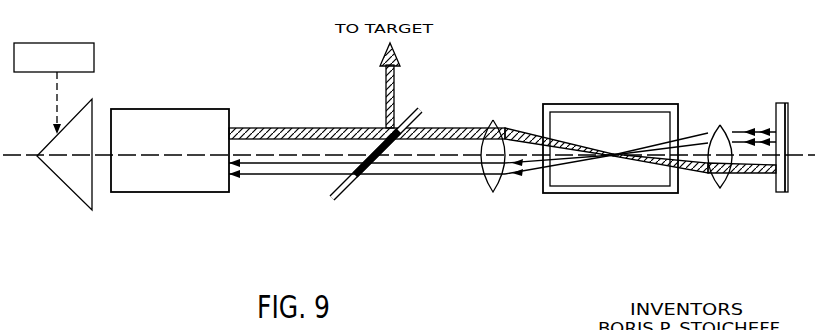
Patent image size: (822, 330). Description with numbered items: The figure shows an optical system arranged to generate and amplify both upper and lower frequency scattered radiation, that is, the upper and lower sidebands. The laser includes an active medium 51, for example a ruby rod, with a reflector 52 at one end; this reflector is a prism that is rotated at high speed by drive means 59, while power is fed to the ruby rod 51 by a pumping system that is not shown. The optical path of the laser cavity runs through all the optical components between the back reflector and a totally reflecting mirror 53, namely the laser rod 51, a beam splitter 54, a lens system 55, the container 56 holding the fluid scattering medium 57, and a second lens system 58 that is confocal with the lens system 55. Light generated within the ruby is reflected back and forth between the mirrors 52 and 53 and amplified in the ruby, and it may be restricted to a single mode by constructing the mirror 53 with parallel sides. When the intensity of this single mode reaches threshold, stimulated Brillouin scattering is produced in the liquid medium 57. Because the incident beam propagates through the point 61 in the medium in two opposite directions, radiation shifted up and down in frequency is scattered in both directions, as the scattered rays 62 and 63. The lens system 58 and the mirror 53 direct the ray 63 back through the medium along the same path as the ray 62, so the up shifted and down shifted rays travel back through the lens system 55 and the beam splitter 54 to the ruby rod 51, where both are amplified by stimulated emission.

The active medium 51 is at (164, 109).
The reflector 52 is at (70, 190).
The totally reflecting mirror 53 is at (785, 103).
The beam splitter 54 is at (411, 108).
The lens system 55 is at (497, 118).
The container 56 is at (565, 104).
The fluid scattering medium 57 is at (637, 127).
The second lens system 58 is at (717, 127).
The drive means 59 is at (94, 62).
The point 61 is at (614, 158).
The scattered ray 62 is at (522, 176).
The scattered ray 63 is at (686, 136).